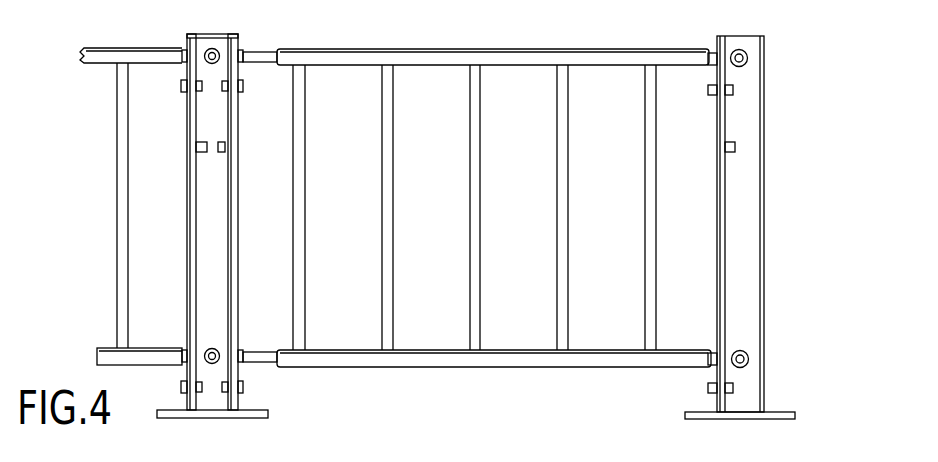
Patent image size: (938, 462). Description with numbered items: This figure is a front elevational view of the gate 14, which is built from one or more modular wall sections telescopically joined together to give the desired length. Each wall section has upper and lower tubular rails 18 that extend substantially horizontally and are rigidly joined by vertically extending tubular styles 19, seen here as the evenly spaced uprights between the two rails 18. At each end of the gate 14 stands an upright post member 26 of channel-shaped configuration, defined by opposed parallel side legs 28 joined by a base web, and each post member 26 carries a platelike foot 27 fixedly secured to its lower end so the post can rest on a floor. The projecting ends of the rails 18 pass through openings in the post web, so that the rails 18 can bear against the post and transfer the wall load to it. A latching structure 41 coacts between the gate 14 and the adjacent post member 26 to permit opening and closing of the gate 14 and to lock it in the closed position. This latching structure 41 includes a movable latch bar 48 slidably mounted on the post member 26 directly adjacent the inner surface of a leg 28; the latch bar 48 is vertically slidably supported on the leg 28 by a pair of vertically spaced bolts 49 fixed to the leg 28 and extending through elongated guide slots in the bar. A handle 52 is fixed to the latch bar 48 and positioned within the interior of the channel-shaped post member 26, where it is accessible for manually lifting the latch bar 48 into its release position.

The gate 14 is at (494, 217).
The tubular rail 18 is at (507, 56).
The tubular style 19 is at (474, 177).
The upright post member 26 is at (222, 207).
The platelike foot 27 is at (257, 417).
The side leg 28 is at (188, 220).
The latching structure 41 is at (243, 47).
The latch bar 48 is at (194, 252).
The bolt 49 is at (241, 88).
The handle 52 is at (225, 146).